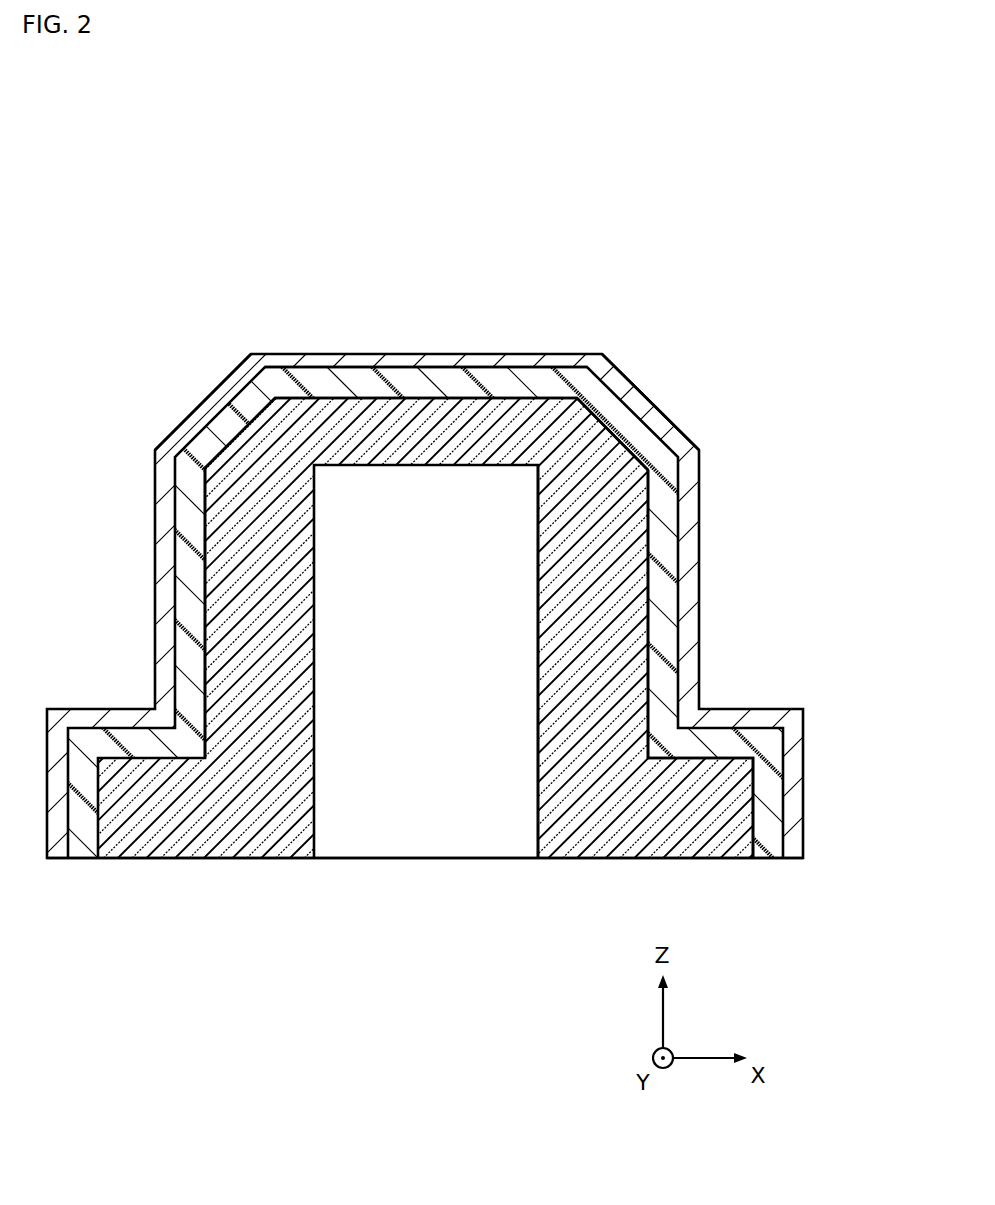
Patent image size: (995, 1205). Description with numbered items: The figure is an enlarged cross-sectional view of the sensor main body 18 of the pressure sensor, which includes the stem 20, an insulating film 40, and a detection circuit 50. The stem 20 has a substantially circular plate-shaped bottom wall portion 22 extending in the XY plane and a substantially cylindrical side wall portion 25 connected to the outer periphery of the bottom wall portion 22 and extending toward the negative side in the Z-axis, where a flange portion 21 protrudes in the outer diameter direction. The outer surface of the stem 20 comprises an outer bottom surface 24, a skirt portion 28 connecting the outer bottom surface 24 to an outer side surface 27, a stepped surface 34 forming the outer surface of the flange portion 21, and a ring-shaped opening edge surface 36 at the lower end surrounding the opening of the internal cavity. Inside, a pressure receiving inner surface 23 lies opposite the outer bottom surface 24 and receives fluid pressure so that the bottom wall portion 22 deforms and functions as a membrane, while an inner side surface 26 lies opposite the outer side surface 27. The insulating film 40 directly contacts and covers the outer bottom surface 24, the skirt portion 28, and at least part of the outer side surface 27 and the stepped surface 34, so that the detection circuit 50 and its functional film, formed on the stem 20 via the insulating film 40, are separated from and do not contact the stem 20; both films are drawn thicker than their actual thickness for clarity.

The sensor main body 18 is at (703, 355).
The stem 20 is at (616, 591).
The flange portion 21 is at (708, 810).
The bottom wall portion 22 is at (563, 366).
The pressure receiving inner surface 23 is at (433, 465).
The outer bottom surface 24 is at (458, 397).
The side wall portion 25 is at (242, 595).
The inner side surface 26 is at (538, 720).
The outer side surface 27 is at (648, 542).
The skirt portion 28 is at (233, 440).
The stepped surface 34 is at (717, 757).
The opening edge surface 36 is at (647, 858).
The insulating film 40 is at (325, 376).
The detection circuit 50 is at (395, 358).